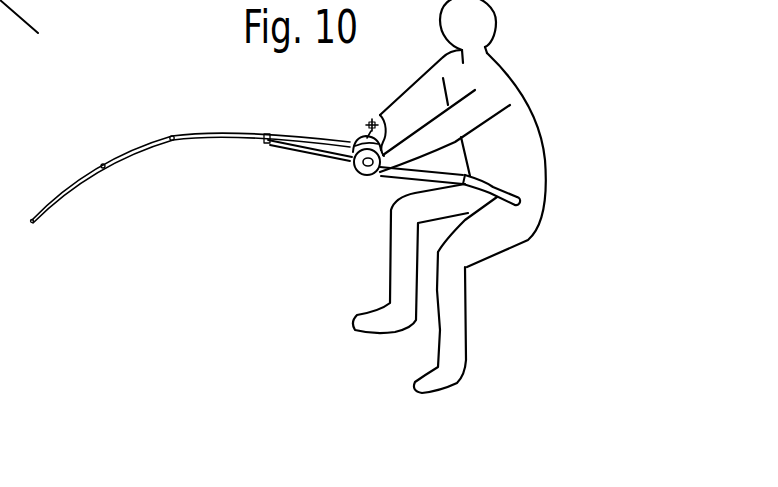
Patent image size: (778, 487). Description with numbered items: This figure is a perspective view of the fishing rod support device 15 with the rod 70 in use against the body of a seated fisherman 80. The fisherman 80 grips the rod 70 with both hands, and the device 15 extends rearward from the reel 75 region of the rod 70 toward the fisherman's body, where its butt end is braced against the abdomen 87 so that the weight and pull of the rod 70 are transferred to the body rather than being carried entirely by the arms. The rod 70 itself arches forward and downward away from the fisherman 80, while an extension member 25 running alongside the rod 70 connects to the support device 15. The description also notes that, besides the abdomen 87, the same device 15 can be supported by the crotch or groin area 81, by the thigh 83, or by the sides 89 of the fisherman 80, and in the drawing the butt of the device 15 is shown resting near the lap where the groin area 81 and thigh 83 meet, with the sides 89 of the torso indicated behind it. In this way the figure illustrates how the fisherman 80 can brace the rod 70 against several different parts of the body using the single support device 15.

The fishing rod support device 15 is at (500, 190).
The rod butt extension tube 25 is at (403, 175).
The rod 70 is at (192, 140).
The reel 75 is at (357, 132).
The fisherman 80 is at (523, 138).
The crotch/groin area 81 is at (480, 208).
The thigh 83 is at (487, 240).
The abdomen 87 is at (510, 207).
The sides 89 is at (518, 118).